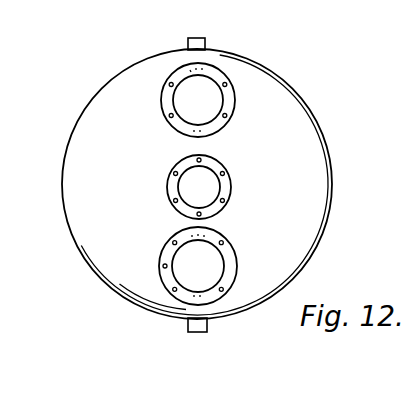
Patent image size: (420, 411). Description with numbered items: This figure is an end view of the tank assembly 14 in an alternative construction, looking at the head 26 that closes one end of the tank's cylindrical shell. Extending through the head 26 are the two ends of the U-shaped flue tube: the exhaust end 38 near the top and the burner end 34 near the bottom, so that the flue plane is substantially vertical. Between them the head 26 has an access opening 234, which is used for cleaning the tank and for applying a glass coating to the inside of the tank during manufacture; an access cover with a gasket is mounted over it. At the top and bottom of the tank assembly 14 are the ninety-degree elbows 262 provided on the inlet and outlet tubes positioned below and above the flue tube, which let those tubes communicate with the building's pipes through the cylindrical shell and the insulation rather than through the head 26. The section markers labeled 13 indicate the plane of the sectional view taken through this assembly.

The tank assembly 14 is at (316, 102).
The head 26 is at (296, 138).
The 90° elbow 262 is at (188, 44).
The exhaust end 38 is at (226, 80).
The access opening 234 is at (167, 182).
The burner end 34 is at (229, 249).
The section line 13- 13 is at (198, 3).